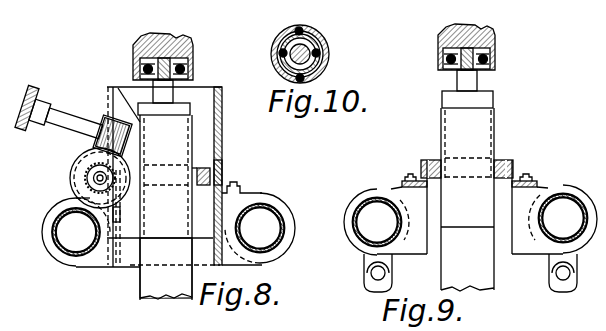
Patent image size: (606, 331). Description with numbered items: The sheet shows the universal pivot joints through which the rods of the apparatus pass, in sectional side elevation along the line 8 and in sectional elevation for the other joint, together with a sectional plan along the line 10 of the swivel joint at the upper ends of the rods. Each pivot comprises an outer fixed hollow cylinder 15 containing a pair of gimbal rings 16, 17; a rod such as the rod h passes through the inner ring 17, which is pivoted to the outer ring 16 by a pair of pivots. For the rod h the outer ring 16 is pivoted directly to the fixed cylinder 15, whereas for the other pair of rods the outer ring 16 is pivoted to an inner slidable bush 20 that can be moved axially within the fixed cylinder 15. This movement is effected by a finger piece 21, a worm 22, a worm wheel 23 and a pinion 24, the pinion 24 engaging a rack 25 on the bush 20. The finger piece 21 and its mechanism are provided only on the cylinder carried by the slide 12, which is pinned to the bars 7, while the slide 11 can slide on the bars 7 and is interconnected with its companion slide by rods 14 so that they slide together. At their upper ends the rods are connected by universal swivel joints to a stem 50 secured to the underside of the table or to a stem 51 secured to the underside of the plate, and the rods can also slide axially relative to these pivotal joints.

In FIG. 8, the bars 7 is at (52, 220).
In FIG. 9, the bars 7 is at (373, 196).
In FIG. 8, the section line 8— 8 is at (148, 281).
In FIG. 8, the section line 10— 10 is at (146, 69).
In FIG. 9, the section line 10— 10 is at (449, 59).
In FIG. 9, the slide 11 is at (535, 188).
In FIG. 8, the slide 12 is at (238, 192).
In FIG. 9, the rods 14 is at (385, 276).
In FIG. 8, the outer fixed hollow cylinder 15 is at (219, 95).
In FIG. 9, the outer fixed hollow cylinder 15 is at (421, 163).
In FIG. 8, the outer gimbal ring 16 is at (222, 163).
In FIG. 9, the outer gimbal ring 16 is at (503, 160).
In FIG. 8, the inner gimbal ring 17 is at (195, 167).
In FIG. 9, the inner gimbal ring 17 is at (436, 145).
In FIG. 8, the inner slidable bush 20 is at (220, 112).
In FIG. 8, the finger piece 21 is at (38, 105).
In FIG. 8, the worm 22 is at (103, 120).
In FIG. 8, the worm wheel 23 is at (74, 167).
In FIG. 8, the pinion 24 is at (93, 180).
In FIG. 8, the rack 25 is at (118, 217).
In FIG. 8, the stem 50 is at (142, 41).
In FIG. 9, the stem 51 is at (443, 37).
In FIG. 9, the rod h is at (488, 277).